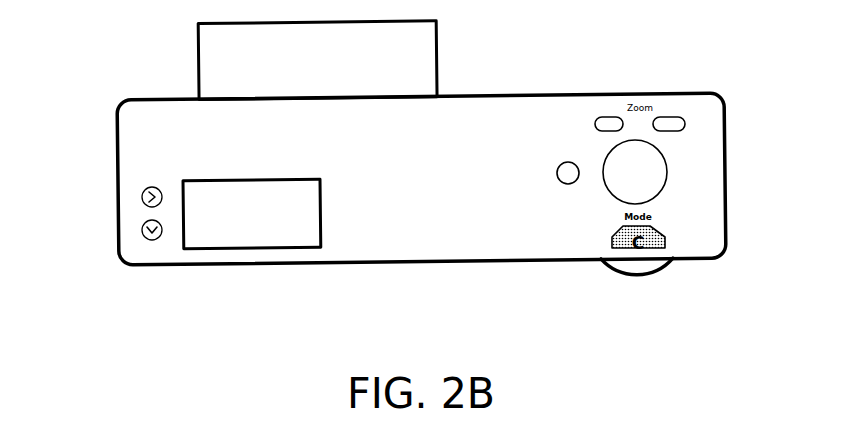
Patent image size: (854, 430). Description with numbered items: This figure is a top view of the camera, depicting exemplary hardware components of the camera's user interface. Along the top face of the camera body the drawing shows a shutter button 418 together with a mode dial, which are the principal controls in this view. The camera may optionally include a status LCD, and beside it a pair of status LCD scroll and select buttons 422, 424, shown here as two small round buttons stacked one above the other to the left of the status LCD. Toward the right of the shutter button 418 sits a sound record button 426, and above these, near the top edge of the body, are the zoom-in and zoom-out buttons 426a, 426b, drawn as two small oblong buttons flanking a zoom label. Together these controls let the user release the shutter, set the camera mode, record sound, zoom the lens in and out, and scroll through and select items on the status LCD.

The shutter button 418 is at (660, 190).
The status LCD scroll button 422 is at (142, 199).
The status LCD select button 424 is at (142, 231).
The sound record button 426 is at (557, 175).
The zoom-in button 426a is at (603, 115).
The zoom-out button 426b is at (673, 115).